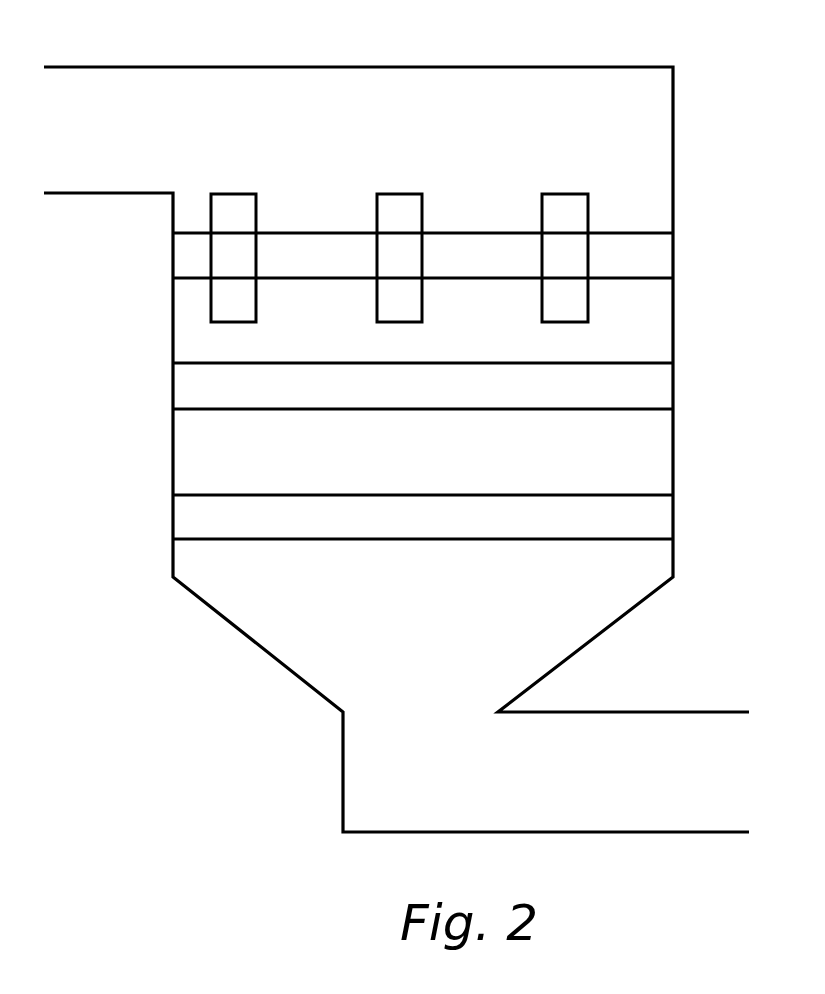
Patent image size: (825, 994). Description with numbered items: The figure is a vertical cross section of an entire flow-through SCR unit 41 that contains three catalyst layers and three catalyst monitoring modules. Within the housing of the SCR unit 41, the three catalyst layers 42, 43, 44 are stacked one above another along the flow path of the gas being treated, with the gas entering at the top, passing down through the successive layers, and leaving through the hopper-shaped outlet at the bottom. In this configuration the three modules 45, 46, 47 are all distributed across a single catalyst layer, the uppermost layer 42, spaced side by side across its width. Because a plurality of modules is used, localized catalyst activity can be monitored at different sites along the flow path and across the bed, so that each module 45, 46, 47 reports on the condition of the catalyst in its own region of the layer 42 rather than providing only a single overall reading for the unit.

The SCR unit 41 is at (675, 115).
The catalyst layer 42 is at (185, 262).
The catalyst layer 43 is at (185, 392).
The catalyst layer 44 is at (185, 522).
The catalyst monitoring module 45 is at (233, 193).
The catalyst monitoring module 46 is at (400, 193).
The catalyst monitoring module 47 is at (566, 193).